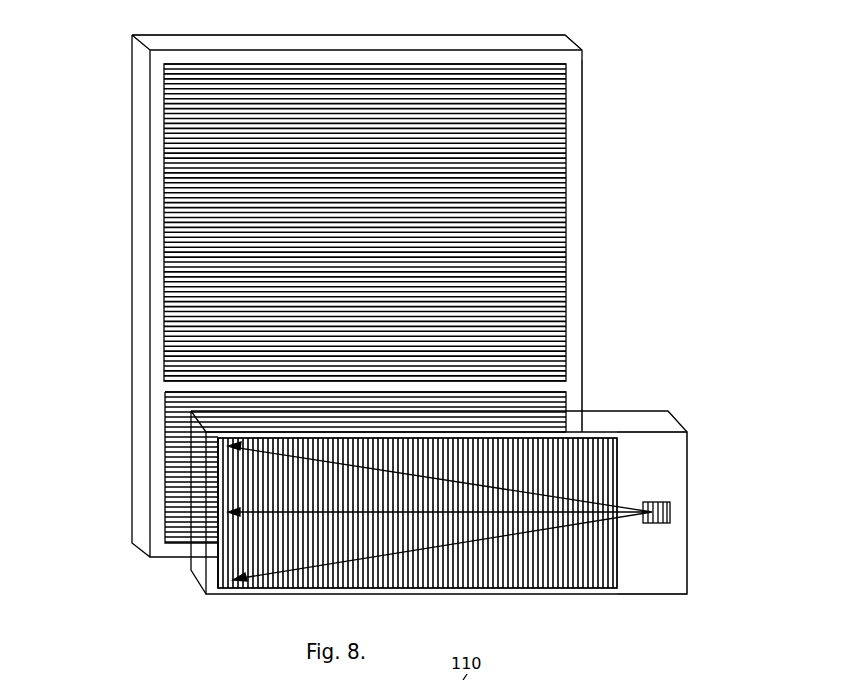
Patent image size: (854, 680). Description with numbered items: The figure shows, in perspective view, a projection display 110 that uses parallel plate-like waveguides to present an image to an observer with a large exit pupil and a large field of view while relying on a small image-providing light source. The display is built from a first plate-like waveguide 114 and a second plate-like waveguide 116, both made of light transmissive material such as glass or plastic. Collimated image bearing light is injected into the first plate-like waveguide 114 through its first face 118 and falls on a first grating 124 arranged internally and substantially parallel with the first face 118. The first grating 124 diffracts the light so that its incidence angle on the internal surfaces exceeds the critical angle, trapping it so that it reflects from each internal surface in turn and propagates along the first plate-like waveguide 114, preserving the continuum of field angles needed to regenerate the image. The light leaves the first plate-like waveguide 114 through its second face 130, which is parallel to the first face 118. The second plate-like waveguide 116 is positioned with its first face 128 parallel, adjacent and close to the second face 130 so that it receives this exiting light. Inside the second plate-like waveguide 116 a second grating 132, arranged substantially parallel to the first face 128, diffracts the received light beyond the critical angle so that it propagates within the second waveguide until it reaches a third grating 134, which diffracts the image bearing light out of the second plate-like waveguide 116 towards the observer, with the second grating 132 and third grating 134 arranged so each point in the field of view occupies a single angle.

The projection display 110 is at (647, 138).
The first plate-like waveguide 114 is at (663, 423).
The second plate-like waveguide 116 is at (575, 68).
The first face 118 is at (663, 580).
The first grating 124 is at (575, 568).
The first face 128 is at (575, 324).
The second face 130 is at (625, 408).
The second grating 132 is at (167, 445).
The third grating 134 is at (203, 253).